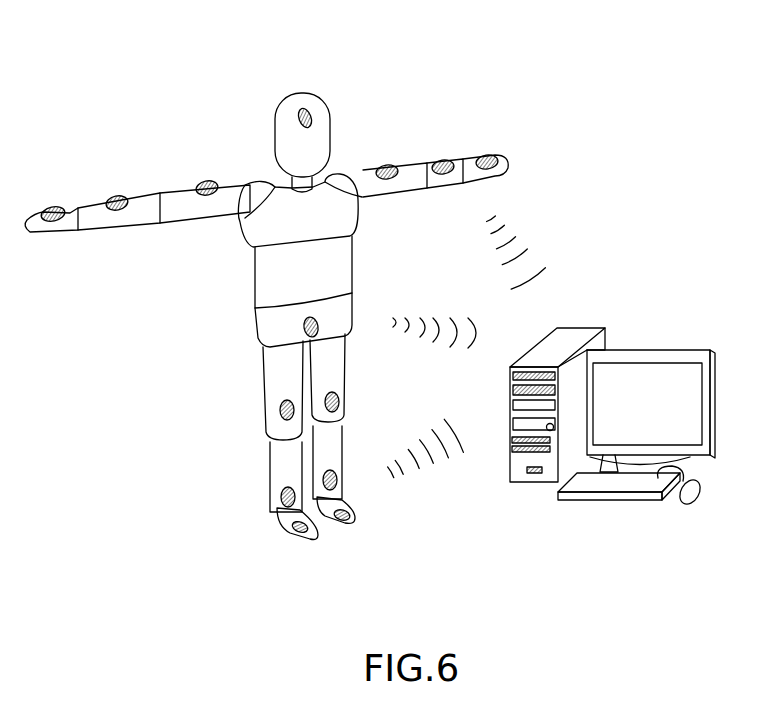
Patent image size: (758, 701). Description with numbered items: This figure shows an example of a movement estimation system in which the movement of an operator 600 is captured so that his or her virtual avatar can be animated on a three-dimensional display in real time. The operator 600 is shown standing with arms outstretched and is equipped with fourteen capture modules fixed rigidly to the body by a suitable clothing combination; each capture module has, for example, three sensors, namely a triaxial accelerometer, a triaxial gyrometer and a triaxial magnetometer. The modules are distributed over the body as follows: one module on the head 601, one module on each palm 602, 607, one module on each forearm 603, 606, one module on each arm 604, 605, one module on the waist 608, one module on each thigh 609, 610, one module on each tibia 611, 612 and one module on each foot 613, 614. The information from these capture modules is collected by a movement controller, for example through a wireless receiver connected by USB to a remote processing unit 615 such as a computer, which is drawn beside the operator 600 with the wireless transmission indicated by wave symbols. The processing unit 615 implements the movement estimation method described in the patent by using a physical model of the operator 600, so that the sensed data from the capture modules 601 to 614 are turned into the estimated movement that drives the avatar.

The operator 600 is at (277, 113).
The capture module on the head 601 is at (305, 112).
The capture module on a palm 602 is at (56, 209).
The capture module on a forearm 603 is at (120, 199).
The capture module on an arm 604 is at (209, 183).
The capture module on an arm 605 is at (388, 167).
The capture module on a forearm 606 is at (445, 162).
The capture module on a palm 607 is at (489, 157).
The capture module on the waist 608 is at (303, 327).
The capture module on a thigh 609 is at (336, 400).
The capture module on a thigh 610 is at (283, 409).
The capture module on a tibia 611 is at (285, 496).
The capture module on a tibia 612 is at (336, 478).
The capture module on a foot 613 is at (292, 529).
The capture module on a foot 614 is at (345, 520).
The remote processing unit 615 is at (628, 338).